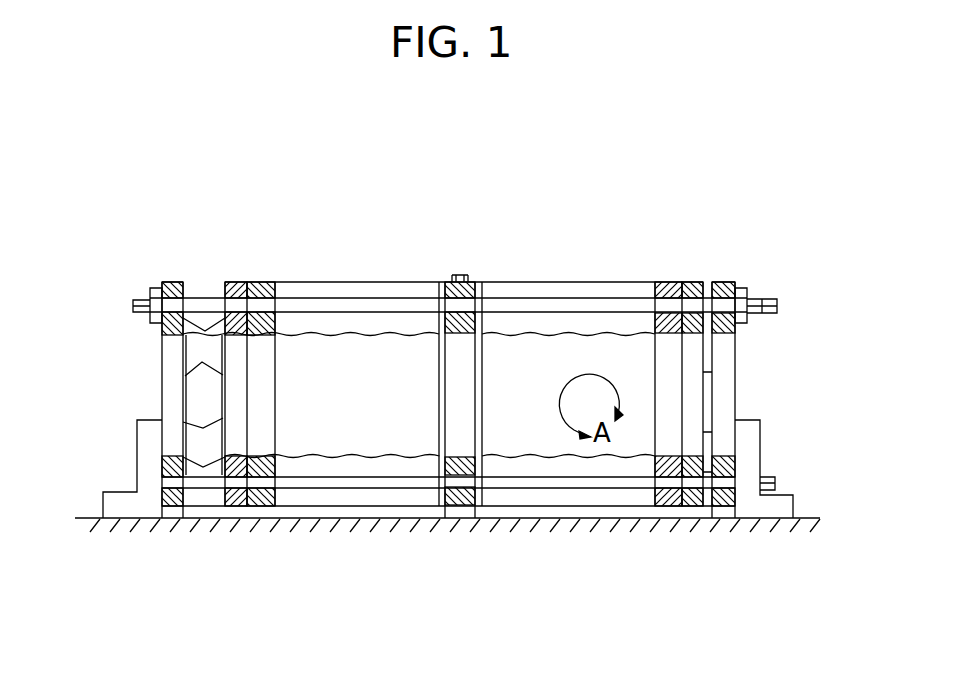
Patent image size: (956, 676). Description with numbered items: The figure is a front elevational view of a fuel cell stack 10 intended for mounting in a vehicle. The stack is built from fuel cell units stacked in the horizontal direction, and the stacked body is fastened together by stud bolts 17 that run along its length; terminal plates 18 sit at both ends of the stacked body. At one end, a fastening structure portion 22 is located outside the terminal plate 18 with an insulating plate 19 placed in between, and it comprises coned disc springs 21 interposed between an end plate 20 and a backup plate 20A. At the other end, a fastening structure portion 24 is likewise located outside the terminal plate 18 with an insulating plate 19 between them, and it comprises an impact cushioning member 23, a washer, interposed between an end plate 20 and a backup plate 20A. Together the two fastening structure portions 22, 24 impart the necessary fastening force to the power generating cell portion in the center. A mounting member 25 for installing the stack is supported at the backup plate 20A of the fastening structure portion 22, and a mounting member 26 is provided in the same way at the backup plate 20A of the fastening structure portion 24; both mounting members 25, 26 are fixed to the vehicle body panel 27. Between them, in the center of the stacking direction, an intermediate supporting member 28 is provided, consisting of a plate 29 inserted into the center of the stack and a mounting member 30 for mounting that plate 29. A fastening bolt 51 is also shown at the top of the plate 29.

The fuel cell stack 10 is at (541, 255).
The stud bolts 17 is at (368, 305).
The terminal plates 18 is at (268, 282).
The insulating plate 19 is at (253, 282).
The end plate 20 is at (238, 507).
The backup plate 20A is at (172, 352).
The coned disc springs 21 is at (213, 340).
The fastening structure portion 22 is at (170, 282).
The impact cushioning member 23 is at (708, 347).
The fastening structure portion 24 is at (726, 282).
The mounting member 25 is at (138, 503).
The mounting member 26 is at (763, 505).
The vehicle body panel 27 is at (477, 522).
The intermediate supporting member 28 is at (483, 365).
The plate 29 is at (457, 398).
The mounting member 30 is at (455, 513).
The fastening bolts 51 is at (462, 275).